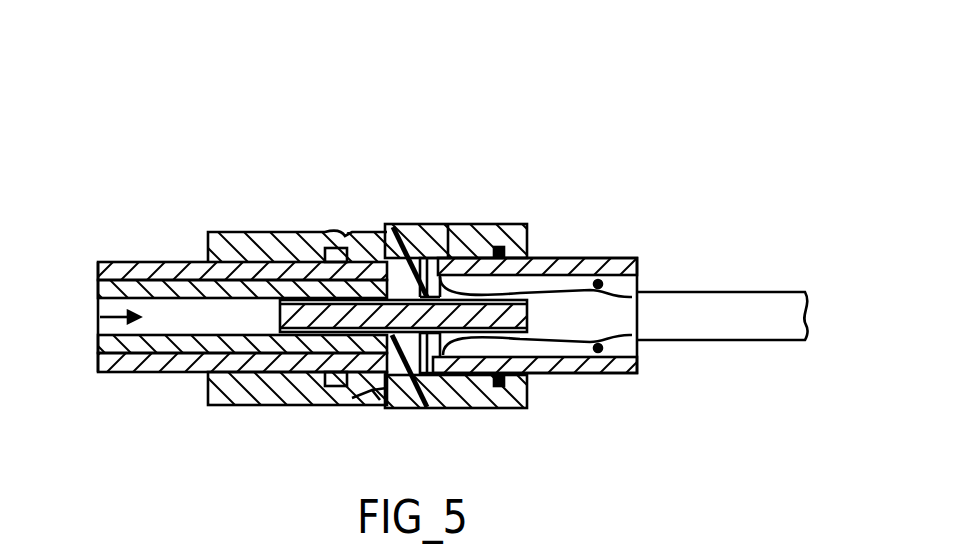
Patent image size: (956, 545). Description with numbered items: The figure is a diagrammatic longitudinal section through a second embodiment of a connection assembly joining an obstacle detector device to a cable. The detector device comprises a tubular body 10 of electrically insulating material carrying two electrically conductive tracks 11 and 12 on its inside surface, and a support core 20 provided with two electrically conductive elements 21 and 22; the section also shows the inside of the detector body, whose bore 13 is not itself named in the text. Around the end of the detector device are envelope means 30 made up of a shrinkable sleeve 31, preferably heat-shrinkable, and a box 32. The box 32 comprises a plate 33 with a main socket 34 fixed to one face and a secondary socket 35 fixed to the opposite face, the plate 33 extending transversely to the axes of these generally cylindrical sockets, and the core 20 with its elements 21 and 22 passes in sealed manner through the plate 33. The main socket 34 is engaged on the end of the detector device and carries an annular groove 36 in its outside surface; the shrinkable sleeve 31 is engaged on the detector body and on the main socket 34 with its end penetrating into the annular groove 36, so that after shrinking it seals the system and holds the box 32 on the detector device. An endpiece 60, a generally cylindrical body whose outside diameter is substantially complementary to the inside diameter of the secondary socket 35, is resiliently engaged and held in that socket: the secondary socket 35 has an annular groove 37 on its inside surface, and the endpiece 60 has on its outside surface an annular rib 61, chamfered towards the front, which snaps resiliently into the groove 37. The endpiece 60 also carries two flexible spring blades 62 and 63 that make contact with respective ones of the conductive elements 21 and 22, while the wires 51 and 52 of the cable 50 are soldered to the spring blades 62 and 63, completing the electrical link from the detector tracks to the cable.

The tubular body 10 is at (136, 268).
The electrically conductive track 11 is at (103, 287).
The electrically conductive track 12 is at (100, 345).
The bore / flow direction 13 is at (100, 317).
The support core 20 is at (408, 385).
The electrically conductive element 21 is at (305, 250).
The electrically conductive element 22 is at (300, 398).
The envelope means 30 is at (341, 200).
The shrinkable sleeve 31 is at (236, 248).
The box 32 is at (444, 218).
The plate 33 is at (390, 240).
The main socket 34 is at (360, 398).
The secondary socket 35 is at (478, 395).
The annular groove 36 is at (380, 405).
The annular groove 37 is at (497, 247).
The cable 50 is at (735, 305).
The wire 51 is at (630, 280).
The wire 52 is at (630, 355).
The endpiece 60 is at (595, 258).
The annular rib 61 is at (505, 405).
The flexible spring blade 62 is at (550, 262).
The flexible spring blade 63 is at (563, 375).